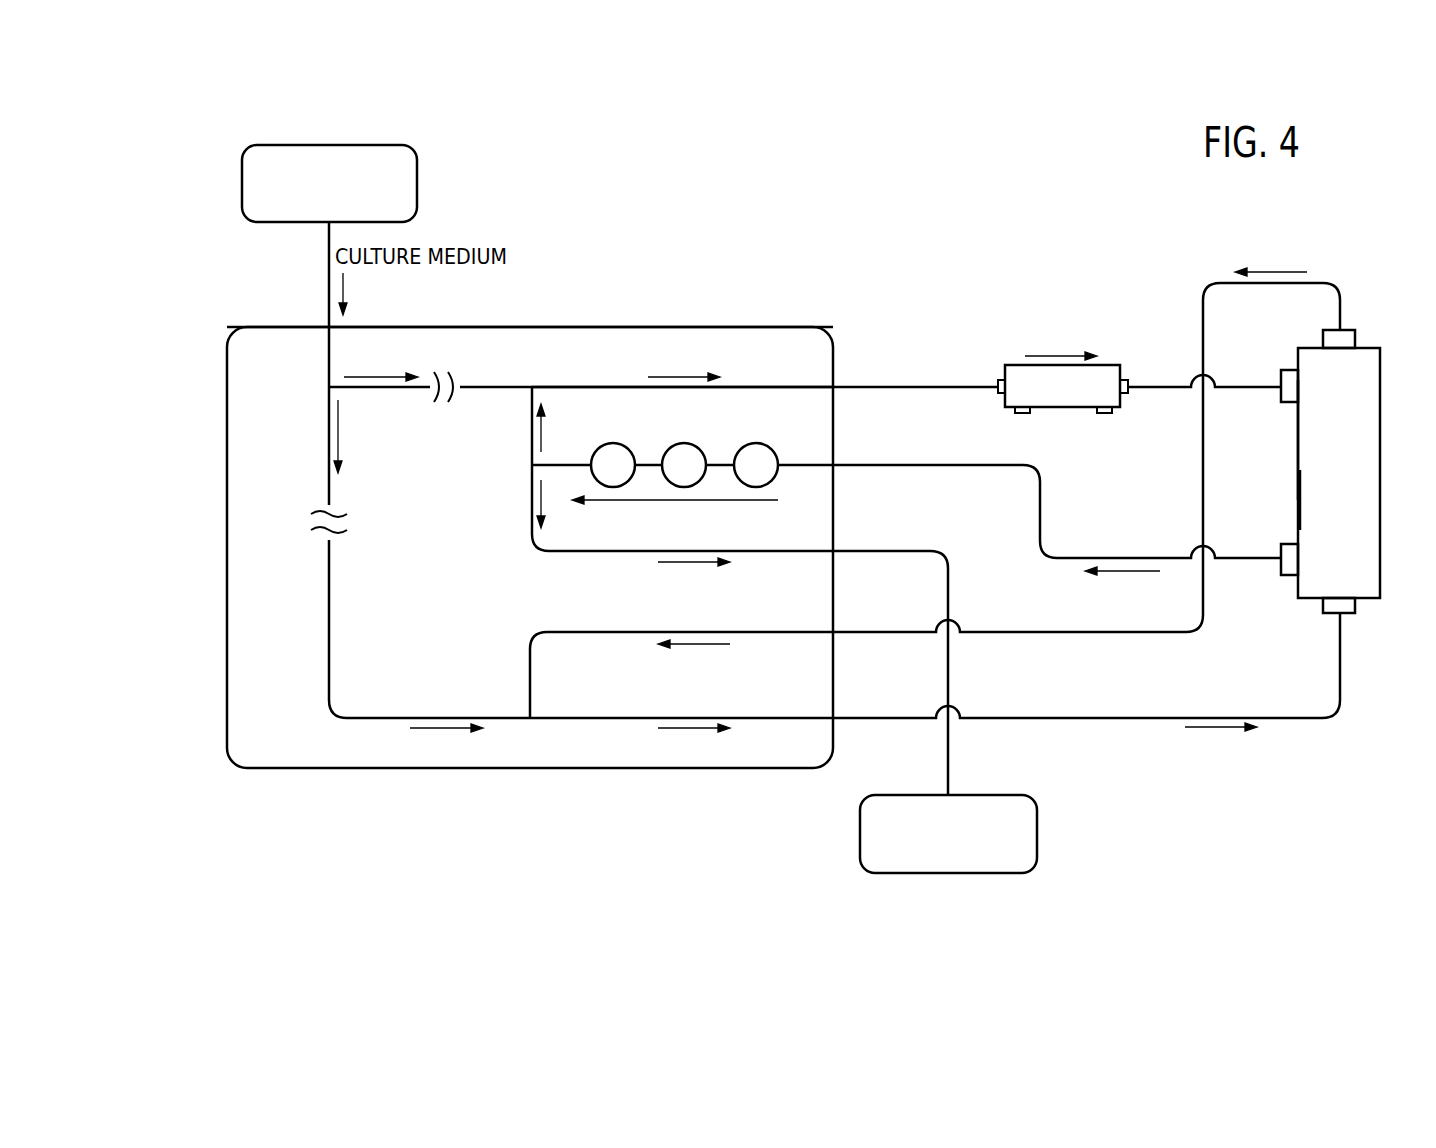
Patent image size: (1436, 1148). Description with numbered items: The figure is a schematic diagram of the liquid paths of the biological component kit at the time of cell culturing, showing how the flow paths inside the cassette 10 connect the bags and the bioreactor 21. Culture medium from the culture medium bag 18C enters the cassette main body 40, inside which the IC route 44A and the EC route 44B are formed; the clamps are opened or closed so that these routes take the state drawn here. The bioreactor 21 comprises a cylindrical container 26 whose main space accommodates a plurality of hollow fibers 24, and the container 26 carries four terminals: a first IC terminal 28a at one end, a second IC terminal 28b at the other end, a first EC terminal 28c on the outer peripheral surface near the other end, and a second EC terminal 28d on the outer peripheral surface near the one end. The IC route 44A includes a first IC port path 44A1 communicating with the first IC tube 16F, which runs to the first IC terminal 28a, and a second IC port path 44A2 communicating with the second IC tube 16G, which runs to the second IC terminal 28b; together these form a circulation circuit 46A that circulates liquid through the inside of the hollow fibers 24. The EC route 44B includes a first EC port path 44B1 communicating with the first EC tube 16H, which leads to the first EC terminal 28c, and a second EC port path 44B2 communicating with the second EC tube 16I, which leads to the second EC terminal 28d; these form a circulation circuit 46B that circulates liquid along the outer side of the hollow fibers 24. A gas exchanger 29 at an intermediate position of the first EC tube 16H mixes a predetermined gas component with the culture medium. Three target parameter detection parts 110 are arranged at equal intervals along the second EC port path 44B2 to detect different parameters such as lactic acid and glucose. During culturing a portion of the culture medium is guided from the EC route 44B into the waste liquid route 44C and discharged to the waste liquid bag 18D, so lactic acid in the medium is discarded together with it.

The cassette 10 is at (640, 302).
The cassette main body 40 is at (717, 326).
The culture medium bag 18C is at (420, 170).
The waste liquid bag 18D is at (1037, 805).
The IC route 44A is at (302, 581).
The first IC port path 44A1 is at (778, 716).
The second IC port path 44A2 is at (778, 630).
The EC route 44B is at (526, 358).
The first EC port path 44B1 is at (770, 386).
The second EC port path 44B2 is at (805, 463).
The waste liquid route 44C is at (576, 553).
The target parameter detection parts 110 is at (754, 443).
The first IC tube 16F is at (1020, 716).
The second IC tube 16G is at (1020, 630).
The first EC tube 16H is at (897, 385).
The second EC tube 16I is at (897, 463).
The circulation circuit 46A is at (1158, 741).
The circulation circuit 46B is at (934, 360).
The gas exchanger 29 is at (1068, 410).
The container 26 is at (1383, 450).
The bioreactor 21 is at (1298, 465).
The hollow fibers 24 is at (1320, 498).
The first IC terminal 28a is at (1355, 613).
The second IC terminal 28b is at (1355, 330).
The first EC terminal 28c is at (1281, 372).
The second EC terminal 28d is at (1281, 578).